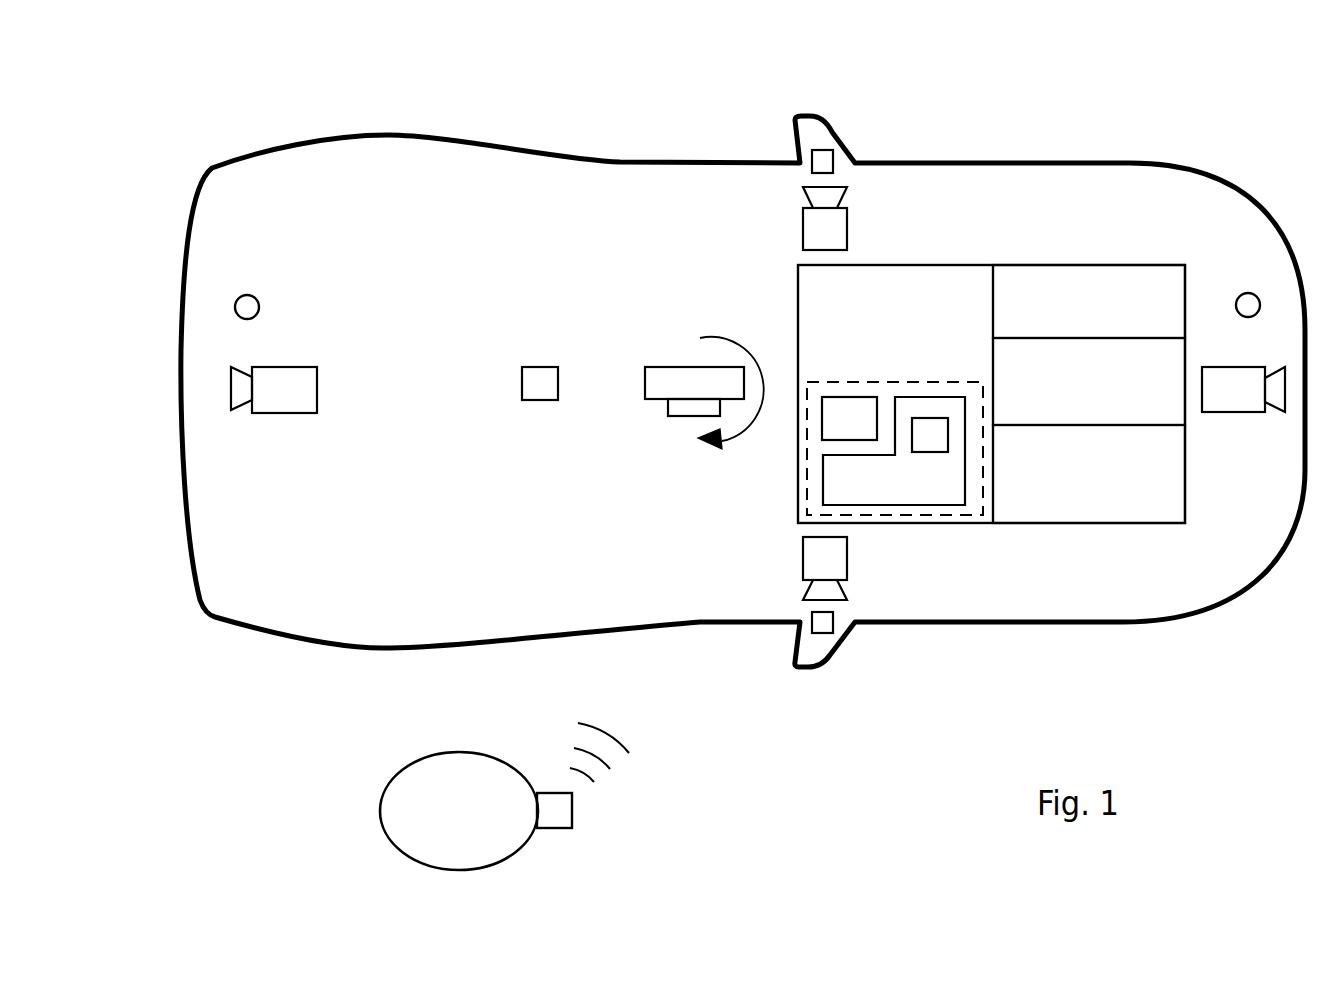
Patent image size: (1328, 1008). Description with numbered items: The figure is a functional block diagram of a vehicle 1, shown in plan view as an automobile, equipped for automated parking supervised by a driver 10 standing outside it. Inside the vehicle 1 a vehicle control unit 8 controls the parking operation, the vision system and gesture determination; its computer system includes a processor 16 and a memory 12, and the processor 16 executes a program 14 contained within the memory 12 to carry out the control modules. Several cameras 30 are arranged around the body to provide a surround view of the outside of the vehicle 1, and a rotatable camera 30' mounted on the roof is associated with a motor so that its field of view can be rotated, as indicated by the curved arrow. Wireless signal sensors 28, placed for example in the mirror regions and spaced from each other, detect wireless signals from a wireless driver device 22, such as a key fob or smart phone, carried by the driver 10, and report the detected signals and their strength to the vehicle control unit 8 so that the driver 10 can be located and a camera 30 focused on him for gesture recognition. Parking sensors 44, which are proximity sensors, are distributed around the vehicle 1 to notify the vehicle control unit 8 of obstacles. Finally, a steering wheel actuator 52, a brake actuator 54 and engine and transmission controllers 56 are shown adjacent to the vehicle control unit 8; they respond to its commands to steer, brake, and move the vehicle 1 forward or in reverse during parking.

The vehicle 1 is at (1042, 163).
The vehicle control unit 8 is at (948, 265).
The driver 10 is at (403, 785).
The memory 12 is at (938, 488).
The program 14 is at (925, 433).
The processor 16 is at (835, 423).
The wireless driver device 22 is at (560, 807).
The wireless signal sensor 28 is at (822, 158).
The camera 30 is at (758, 393).
The rotatable camera 30' is at (681, 416).
The parking sensor 44 is at (250, 295).
The steering wheel actuator 52 is at (1062, 265).
The brake actuator 54 is at (1185, 412).
The engine and transmission controllers 56 is at (1185, 490).